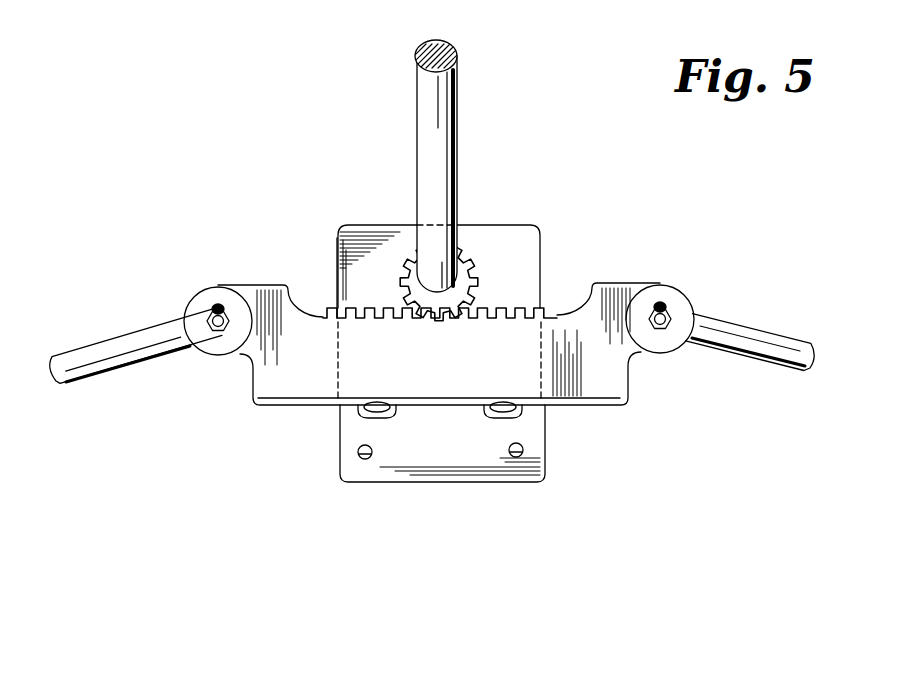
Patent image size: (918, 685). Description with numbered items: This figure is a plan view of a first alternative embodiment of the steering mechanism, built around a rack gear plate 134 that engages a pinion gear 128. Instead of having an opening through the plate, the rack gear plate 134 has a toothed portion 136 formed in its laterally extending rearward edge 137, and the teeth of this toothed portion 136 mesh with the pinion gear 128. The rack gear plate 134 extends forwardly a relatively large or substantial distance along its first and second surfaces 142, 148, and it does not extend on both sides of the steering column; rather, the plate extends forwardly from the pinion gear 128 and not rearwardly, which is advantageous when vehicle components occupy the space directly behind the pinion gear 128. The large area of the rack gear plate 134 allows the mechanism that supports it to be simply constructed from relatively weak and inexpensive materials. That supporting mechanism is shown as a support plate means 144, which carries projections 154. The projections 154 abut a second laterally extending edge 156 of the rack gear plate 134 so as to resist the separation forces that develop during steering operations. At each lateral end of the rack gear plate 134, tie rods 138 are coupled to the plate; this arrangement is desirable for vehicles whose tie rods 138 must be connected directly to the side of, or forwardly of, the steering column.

The pinion gear 128 is at (468, 258).
The rack gear plate 134 is at (610, 382).
The toothed portion 136 is at (508, 308).
The rearward edge 137 is at (557, 310).
The tie rods 138 is at (129, 337).
The first surface 142 is at (278, 406).
The support plate means 144 is at (337, 280).
The second surface 148 is at (305, 408).
The projections 154 is at (499, 419).
The second laterally extending edge 156 is at (571, 408).